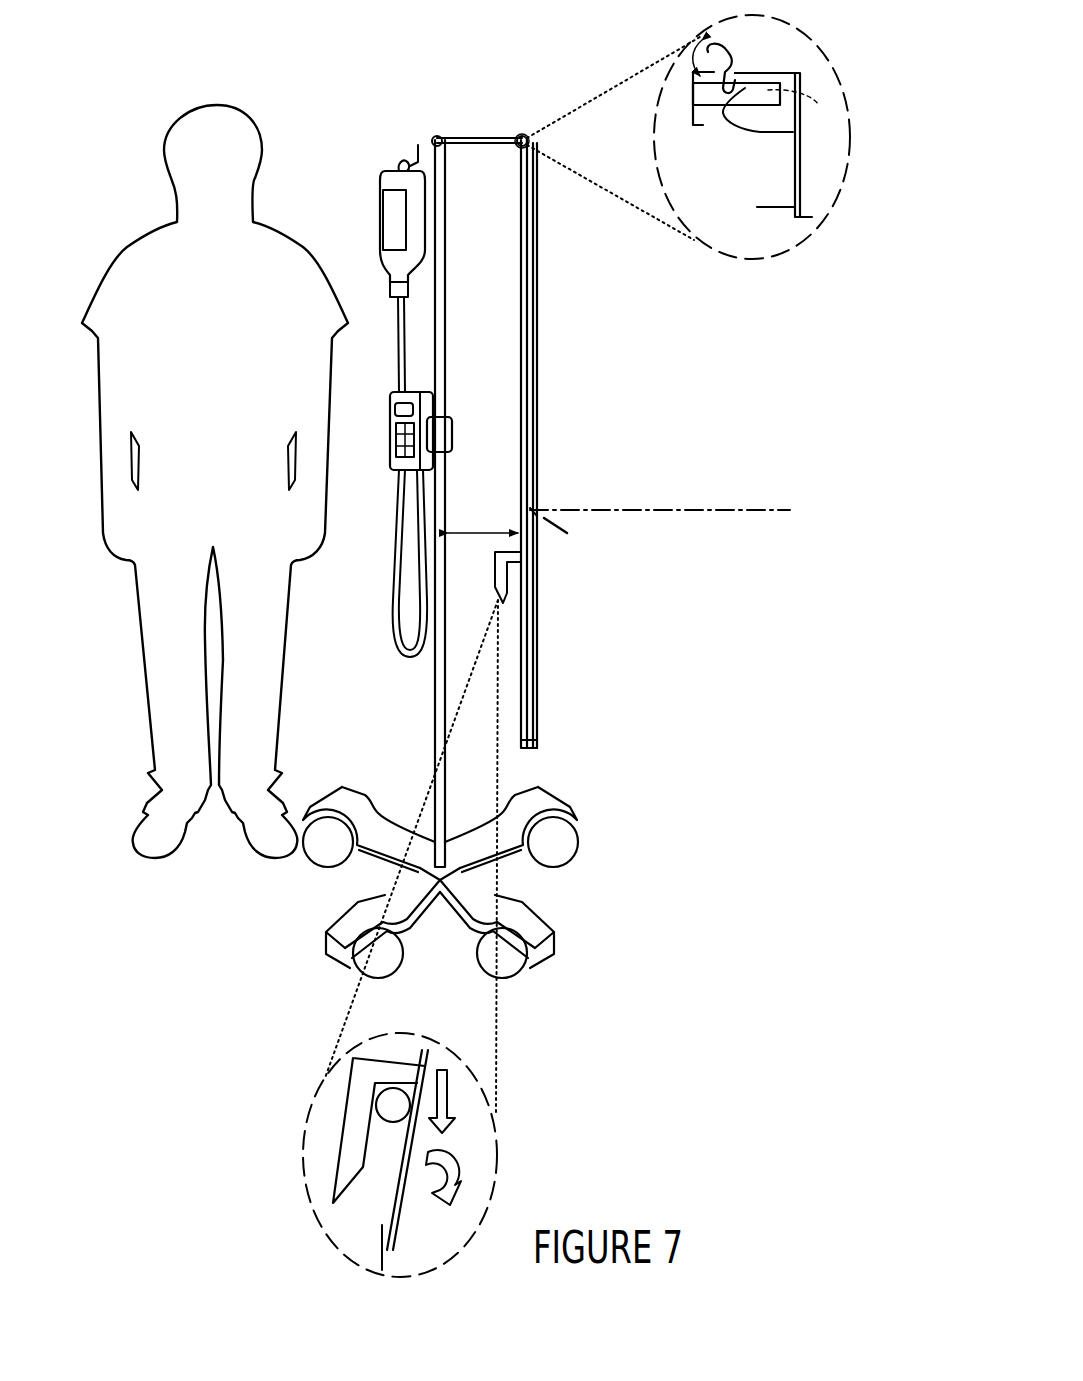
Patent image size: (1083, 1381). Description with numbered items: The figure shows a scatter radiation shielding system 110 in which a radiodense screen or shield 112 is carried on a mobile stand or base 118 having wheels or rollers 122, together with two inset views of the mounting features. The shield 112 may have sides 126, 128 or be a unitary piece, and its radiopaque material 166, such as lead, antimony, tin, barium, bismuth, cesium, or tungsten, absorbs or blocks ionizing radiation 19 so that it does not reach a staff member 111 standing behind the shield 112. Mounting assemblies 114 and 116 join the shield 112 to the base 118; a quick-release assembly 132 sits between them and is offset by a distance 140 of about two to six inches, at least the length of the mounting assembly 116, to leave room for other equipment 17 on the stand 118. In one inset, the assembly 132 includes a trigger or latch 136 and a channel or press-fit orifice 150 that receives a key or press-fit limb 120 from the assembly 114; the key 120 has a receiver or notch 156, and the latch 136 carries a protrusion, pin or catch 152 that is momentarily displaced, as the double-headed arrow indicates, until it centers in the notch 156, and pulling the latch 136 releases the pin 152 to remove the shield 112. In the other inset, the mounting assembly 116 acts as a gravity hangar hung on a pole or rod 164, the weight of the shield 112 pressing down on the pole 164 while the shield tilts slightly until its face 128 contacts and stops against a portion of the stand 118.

The other equipment 17 is at (393, 390).
The ionizing radiation 19 is at (664, 509).
The scatter radiation shielding system 110 is at (450, 88).
The staff member 111 is at (236, 377).
The radiodense screen or shield 112 is at (548, 474).
The mounting assembly 114 is at (470, 136).
The mounting assembly 116 is at (521, 582).
The mobile stand or base 118 is at (390, 755).
The key or press-fit limb 120 is at (748, 95).
The wheels or rollers 122 is at (563, 892).
The side 126 is at (538, 611).
The side 128 is at (520, 728).
The quick-release assembly 132 is at (522, 130).
The trigger or latch 136 is at (704, 38).
The distance 140 is at (483, 518).
The channel or press-fit orifice 150 is at (771, 107).
The protrusion, pin or catch 152 is at (735, 72).
The receiver or notch 156 is at (700, 95).
The pole or rod 164 is at (395, 1122).
The radiopaque material 166 is at (528, 740).